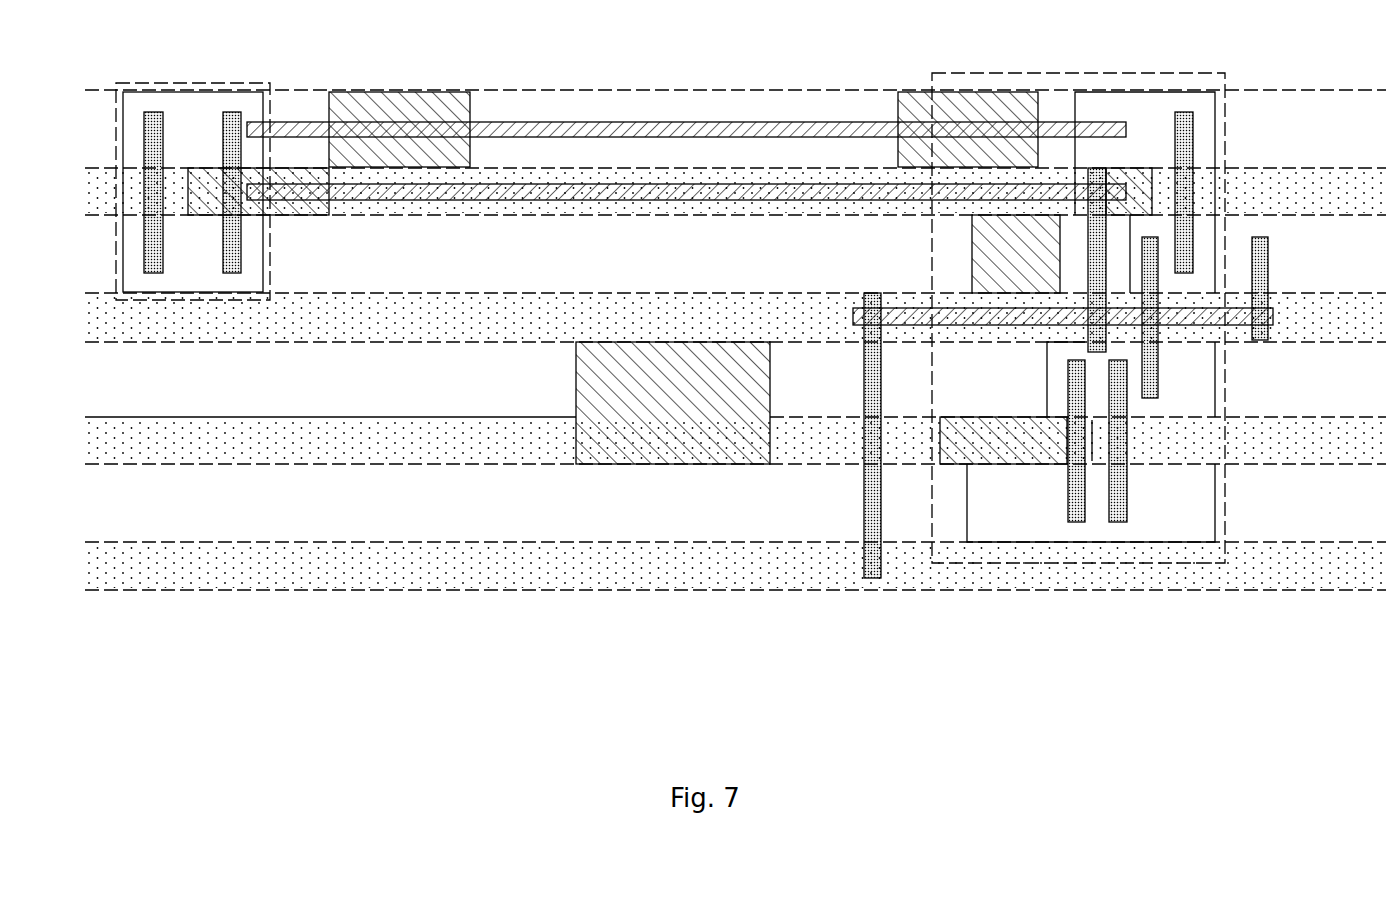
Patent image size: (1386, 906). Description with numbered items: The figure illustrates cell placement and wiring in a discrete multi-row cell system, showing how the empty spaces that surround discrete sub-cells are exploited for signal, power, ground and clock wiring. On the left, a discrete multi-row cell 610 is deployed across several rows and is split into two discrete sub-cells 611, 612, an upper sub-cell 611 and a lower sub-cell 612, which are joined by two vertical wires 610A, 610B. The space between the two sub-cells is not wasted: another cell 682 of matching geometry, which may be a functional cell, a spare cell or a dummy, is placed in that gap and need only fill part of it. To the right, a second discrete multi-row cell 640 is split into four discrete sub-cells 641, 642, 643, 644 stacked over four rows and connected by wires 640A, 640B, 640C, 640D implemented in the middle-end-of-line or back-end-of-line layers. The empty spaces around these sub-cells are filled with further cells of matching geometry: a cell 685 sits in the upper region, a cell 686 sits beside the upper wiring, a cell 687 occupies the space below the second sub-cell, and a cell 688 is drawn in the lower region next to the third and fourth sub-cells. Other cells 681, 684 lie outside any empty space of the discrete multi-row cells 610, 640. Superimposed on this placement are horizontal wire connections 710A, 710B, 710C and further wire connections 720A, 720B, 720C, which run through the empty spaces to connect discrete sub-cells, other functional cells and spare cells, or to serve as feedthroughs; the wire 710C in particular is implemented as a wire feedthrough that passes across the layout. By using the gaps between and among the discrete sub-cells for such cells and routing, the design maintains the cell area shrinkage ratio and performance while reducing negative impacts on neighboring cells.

The discrete multi-row cell 610 is at (117, 127).
The wire 610A is at (155, 118).
The wire 610B is at (235, 118).
The discrete sub-cell 611 is at (190, 103).
The discrete sub-cell 612 is at (250, 265).
The discrete multi-row cell 640 is at (1045, 73).
The wire 640A is at (1192, 142).
The wire 640B is at (1160, 355).
The wire 640C is at (1077, 523).
The wire 640D is at (1118, 523).
The discrete sub-cell 641 is at (1205, 107).
The discrete sub-cell 642 is at (1207, 225).
The discrete sub-cell 643 is at (1205, 395).
The discrete sub-cell 644 is at (1205, 510).
The other cell 681 is at (447, 100).
The other cell of matching geometry 682 is at (310, 175).
The other cell 684 is at (580, 395).
The other cell of matching geometry 685 is at (918, 100).
The other cell of matching geometry 686 is at (1117, 180).
The other cell of matching geometry 687 is at (983, 225).
The seventh dielectric block 688 is at (992, 462).
The horizontal wire connection 710A is at (830, 122).
The horizontal wire connection 710B is at (735, 183).
The horizontal wire connection 710C is at (920, 310).
The wire connection 720A is at (872, 580).
The wire connection 720B is at (1088, 330).
The wire connection 720C is at (1267, 265).